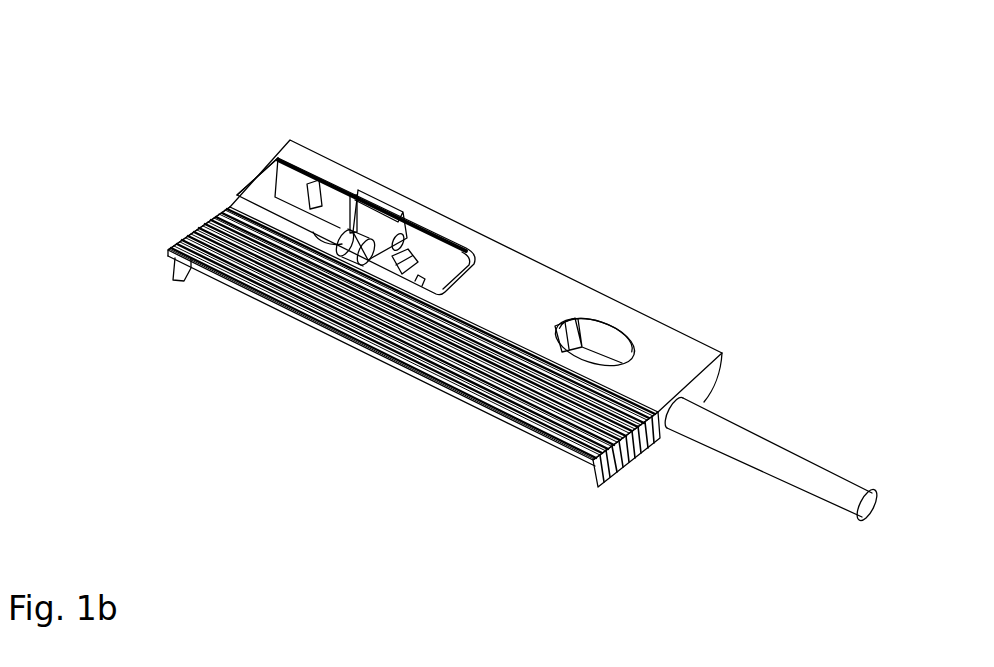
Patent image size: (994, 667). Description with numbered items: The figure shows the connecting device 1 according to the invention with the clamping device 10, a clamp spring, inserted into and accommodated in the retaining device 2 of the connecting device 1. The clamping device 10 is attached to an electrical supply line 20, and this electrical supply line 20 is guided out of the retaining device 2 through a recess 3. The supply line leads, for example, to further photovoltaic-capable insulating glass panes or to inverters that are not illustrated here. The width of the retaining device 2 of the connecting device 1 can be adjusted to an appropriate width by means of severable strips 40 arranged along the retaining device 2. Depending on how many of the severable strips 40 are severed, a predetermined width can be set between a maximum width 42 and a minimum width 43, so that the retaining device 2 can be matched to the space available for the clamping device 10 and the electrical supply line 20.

The connecting device 1 is at (505, 118).
The retaining device 2 is at (543, 287).
The recess 3 is at (667, 430).
The clamping device 10 is at (385, 222).
The electrical supply line 20 is at (745, 410).
The severable strips 40 is at (377, 335).
The maximum width 42 is at (235, 82).
The minimum width 43 is at (283, 130).